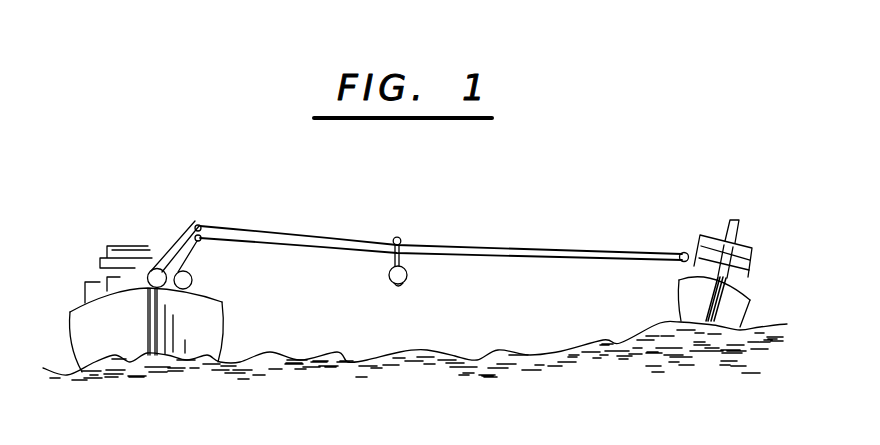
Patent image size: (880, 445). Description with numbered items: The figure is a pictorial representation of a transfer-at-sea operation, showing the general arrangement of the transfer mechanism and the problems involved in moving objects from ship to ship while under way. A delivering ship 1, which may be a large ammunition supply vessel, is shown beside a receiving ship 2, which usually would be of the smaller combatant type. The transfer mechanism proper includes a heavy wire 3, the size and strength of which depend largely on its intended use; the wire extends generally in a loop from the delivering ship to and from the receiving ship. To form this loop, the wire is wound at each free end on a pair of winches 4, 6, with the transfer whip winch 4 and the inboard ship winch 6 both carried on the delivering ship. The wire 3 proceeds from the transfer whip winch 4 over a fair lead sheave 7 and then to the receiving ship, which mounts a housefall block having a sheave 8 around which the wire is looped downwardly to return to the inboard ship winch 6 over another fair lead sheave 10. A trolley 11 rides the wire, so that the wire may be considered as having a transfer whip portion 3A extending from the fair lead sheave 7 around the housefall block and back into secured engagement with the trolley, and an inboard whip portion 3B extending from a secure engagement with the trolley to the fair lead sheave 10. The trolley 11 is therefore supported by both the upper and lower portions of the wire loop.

The delivering ship 1 is at (83, 327).
The receiving ship 2 is at (742, 308).
The heavy wire 3 is at (441, 242).
The transfer whip portion 3A is at (358, 208).
The inboard whip portion 3B is at (294, 247).
The transfer whip winch 4 is at (175, 249).
The inboard ship winch 6 is at (192, 281).
The fair lead sheave 7 is at (143, 242).
The sheave 8 is at (688, 252).
The fair lead sheave 10 is at (201, 241).
The trolley 11 is at (391, 281).